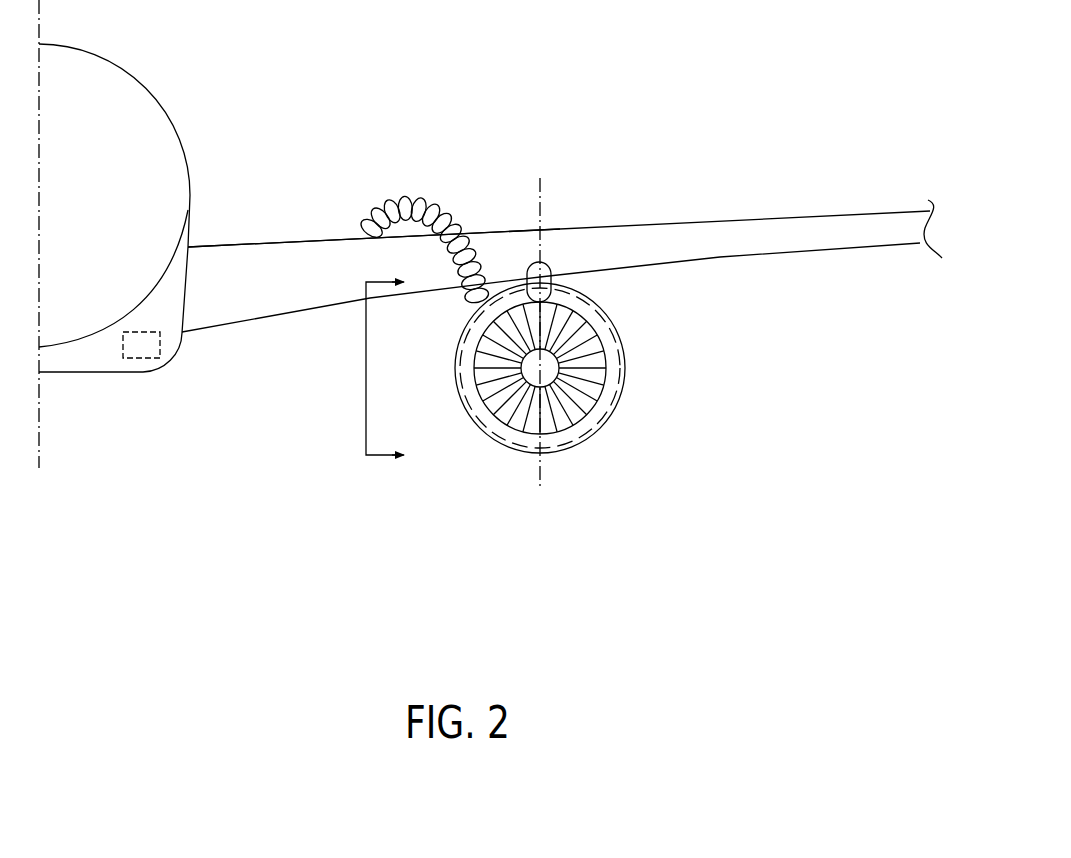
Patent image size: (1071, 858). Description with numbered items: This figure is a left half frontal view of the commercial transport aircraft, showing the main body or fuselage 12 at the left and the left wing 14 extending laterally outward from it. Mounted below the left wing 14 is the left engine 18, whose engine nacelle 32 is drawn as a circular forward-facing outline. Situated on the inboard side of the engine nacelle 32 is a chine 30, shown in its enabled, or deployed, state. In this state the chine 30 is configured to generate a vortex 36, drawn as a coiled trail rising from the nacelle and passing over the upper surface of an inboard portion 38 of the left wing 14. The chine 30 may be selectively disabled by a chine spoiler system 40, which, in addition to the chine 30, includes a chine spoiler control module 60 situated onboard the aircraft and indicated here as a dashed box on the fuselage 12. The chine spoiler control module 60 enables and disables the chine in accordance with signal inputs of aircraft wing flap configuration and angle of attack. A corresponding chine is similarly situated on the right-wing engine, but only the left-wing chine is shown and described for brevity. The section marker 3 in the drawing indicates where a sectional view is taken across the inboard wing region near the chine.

The fuselage 12 is at (172, 120).
The left wing 14 is at (737, 208).
The left engine 18 is at (570, 350).
The chine 30 is at (470, 307).
The engine nacelle 32 is at (617, 360).
The vortex 36 is at (430, 205).
The inboard portion 38 is at (265, 242).
The chine spoiler system 40 is at (292, 463).
The chine spoiler control module 60 is at (143, 358).
The section line 3- 3 is at (393, 370).